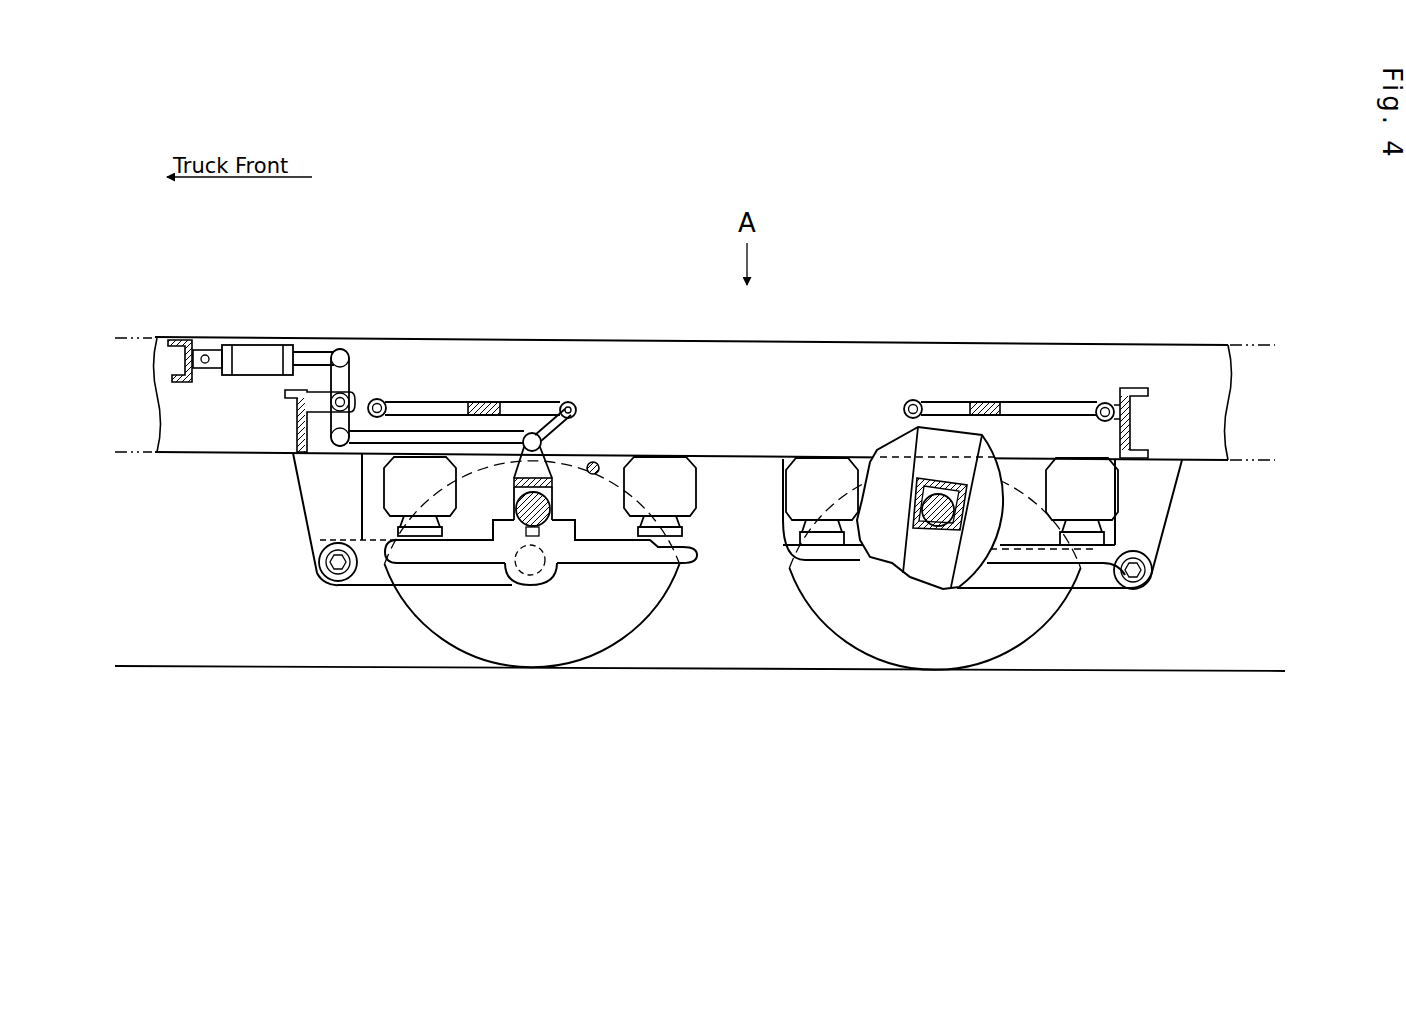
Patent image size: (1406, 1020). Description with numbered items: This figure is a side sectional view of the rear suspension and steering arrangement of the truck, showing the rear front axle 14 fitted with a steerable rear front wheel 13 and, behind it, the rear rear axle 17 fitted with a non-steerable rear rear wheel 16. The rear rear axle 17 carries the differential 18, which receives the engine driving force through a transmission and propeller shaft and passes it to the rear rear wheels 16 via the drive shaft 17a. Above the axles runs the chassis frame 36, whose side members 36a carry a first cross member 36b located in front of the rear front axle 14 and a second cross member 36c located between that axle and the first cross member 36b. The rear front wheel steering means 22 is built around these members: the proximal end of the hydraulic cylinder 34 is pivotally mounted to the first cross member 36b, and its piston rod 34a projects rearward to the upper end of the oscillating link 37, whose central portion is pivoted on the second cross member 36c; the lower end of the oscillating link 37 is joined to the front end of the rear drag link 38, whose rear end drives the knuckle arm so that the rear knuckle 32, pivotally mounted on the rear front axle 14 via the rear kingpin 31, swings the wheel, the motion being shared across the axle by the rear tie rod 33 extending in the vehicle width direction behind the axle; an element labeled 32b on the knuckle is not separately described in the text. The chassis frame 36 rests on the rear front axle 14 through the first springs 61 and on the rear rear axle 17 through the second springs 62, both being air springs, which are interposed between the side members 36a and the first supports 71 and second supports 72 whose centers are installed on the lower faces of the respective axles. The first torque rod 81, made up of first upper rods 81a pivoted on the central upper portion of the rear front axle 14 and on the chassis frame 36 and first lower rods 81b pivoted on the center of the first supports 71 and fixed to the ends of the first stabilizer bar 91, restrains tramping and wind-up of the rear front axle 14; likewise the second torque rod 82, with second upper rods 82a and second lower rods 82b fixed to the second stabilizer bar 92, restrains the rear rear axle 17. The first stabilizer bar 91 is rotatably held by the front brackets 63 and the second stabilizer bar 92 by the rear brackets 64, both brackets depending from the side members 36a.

The rear front wheels 13 is at (627, 638).
The rear front axle 14 is at (553, 508).
The rear rear wheels 16 is at (848, 642).
The rear rear axle 17 is at (938, 540).
The drive shaft 17a is at (898, 477).
The differential 18 is at (990, 535).
The rear front wheel steering means 22 is at (286, 328).
The rear kingpin 31 is at (510, 538).
The rear knuckle 32 is at (512, 467).
The lever link 32b is at (548, 455).
The rear tie rod 33 is at (597, 473).
The hydraulic cylinder 34 is at (252, 337).
The piston rod 34a is at (312, 352).
The chassis frame 36 is at (1162, 340).
The side members 36a is at (1207, 345).
The first cross member 36b is at (185, 358).
The second cross member 36c is at (297, 422).
The oscillating link 37 is at (358, 382).
The rear drag link 38 is at (437, 431).
The first springs 61 is at (403, 498).
The second springs 62 is at (808, 507).
The front brackets 63 is at (303, 517).
The rear brackets 64 is at (1170, 520).
The first supports 71 is at (569, 566).
The second supports 72 is at (1038, 564).
The first torque rod 81 is at (508, 397).
The first upper rods 81a is at (560, 420).
The first lower rods 81b is at (378, 586).
The second torque rod 82 is at (952, 398).
The second upper rods 82a is at (1023, 401).
The second lower rods 82b is at (1101, 591).
The first stabilizer bar 91 is at (318, 580).
The second stabilizer bar 92 is at (1150, 586).